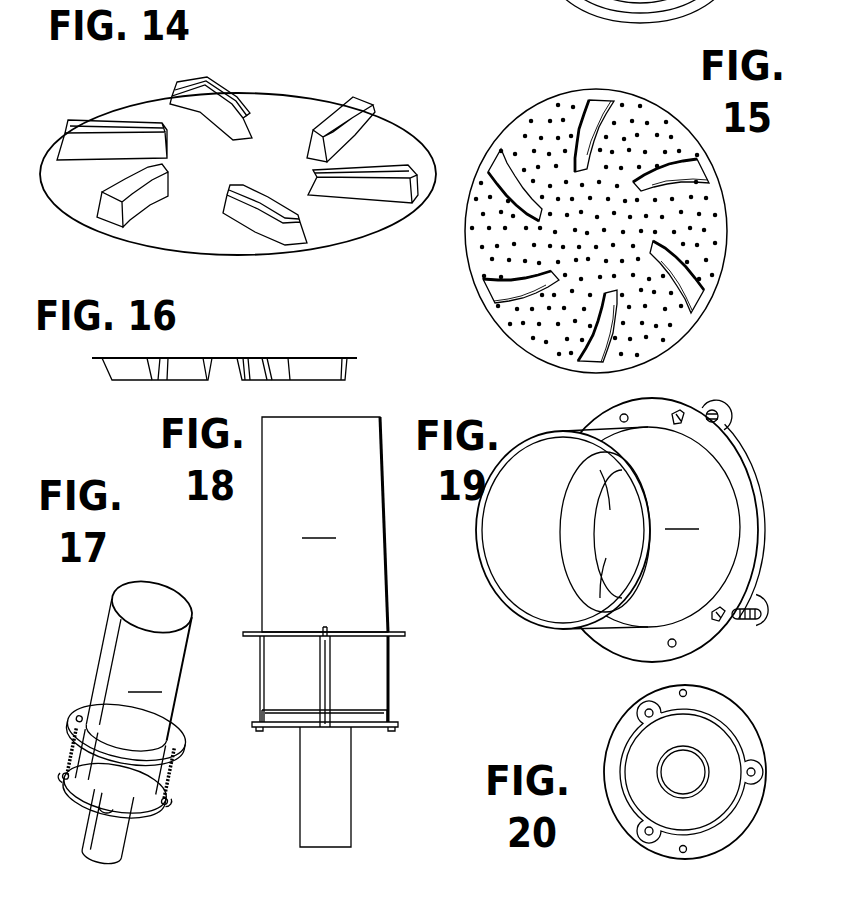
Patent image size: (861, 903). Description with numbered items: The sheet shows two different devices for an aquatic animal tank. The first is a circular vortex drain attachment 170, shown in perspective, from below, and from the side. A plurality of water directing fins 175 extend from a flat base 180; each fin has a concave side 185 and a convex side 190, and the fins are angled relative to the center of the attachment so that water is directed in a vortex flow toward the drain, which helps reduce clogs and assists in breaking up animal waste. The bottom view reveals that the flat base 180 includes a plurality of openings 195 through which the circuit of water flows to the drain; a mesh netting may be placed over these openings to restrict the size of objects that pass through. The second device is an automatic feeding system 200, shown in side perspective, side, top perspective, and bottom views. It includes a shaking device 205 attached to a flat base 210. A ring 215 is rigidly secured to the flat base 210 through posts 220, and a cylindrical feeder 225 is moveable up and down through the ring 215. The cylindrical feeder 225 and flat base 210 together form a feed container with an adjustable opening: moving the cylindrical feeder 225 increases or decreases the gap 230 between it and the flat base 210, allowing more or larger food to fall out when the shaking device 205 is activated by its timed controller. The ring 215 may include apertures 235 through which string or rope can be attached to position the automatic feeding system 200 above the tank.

In FIG. 14, the circular vortex drain attachment 170 is at (239, 152).
In FIG. 15, the circular vortex drain attachment 170 is at (601, 205).
In FIG. 14, the water directing fins 175 is at (213, 85).
In FIG. 15, the water directing fins 175 is at (607, 107).
In FIG. 16, the water directing fins 175 is at (118, 368).
In FIG. 14, the flat base 180 is at (290, 118).
In FIG. 16, the flat base 180 is at (207, 357).
In FIG. 14, the concave side 185 is at (190, 100).
In FIG. 14, the convex side 190 is at (242, 225).
In FIG. 15, the openings 195 is at (712, 228).
In FIG. 17, the automatic feeding system 200 is at (137, 700).
In FIG. 17, the shaking device 205 is at (118, 842).
In FIG. 18, the shaking device 205 is at (338, 828).
In FIG. 20, the shaking device 205 is at (693, 780).
In FIG. 17, the flat base 210 is at (100, 798).
In FIG. 18, the flat base 210 is at (398, 725).
In FIG. 19, the flat base 210 is at (720, 413).
In FIG. 20, the flat base 210 is at (648, 800).
In FIG. 17, the ring 215 is at (182, 733).
In FIG. 18, the ring 215 is at (400, 632).
In FIG. 19, the ring 215 is at (657, 530).
In FIG. 20, the ring 215 is at (616, 736).
In FIG. 17, the posts 220 is at (160, 784).
In FIG. 18, the posts 220 is at (325, 680).
In FIG. 19, the posts 220 is at (748, 620).
In FIG. 17, the cylindrical feeder 225 is at (136, 683).
In FIG. 18, the cylindrical feeder 225 is at (324, 569).
In FIG. 19, the cylindrical feeder 225 is at (608, 528).
In FIG. 18, the gap 230 is at (293, 715).
In FIG. 17, the apertures 235 is at (84, 746).
In FIG. 19, the apertures 235 is at (621, 416).
In FIG. 20, the apertures 235 is at (679, 692).